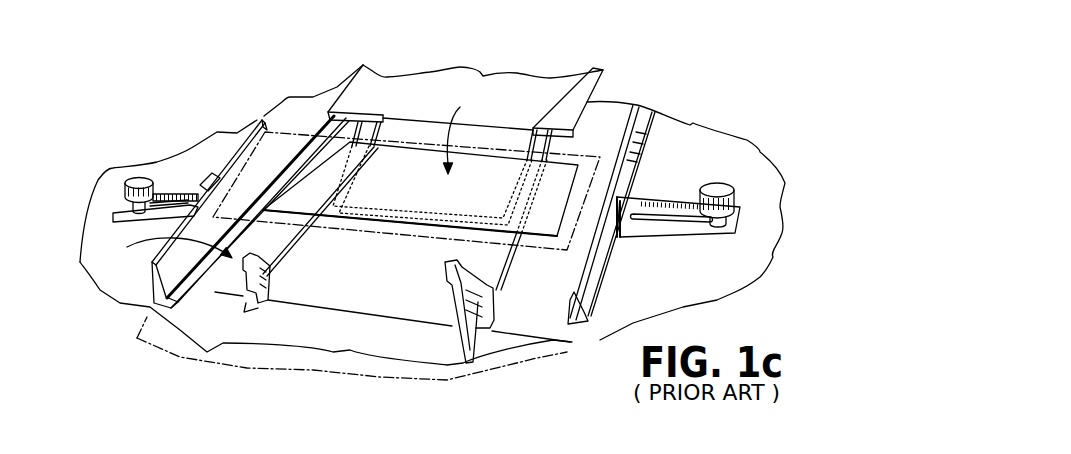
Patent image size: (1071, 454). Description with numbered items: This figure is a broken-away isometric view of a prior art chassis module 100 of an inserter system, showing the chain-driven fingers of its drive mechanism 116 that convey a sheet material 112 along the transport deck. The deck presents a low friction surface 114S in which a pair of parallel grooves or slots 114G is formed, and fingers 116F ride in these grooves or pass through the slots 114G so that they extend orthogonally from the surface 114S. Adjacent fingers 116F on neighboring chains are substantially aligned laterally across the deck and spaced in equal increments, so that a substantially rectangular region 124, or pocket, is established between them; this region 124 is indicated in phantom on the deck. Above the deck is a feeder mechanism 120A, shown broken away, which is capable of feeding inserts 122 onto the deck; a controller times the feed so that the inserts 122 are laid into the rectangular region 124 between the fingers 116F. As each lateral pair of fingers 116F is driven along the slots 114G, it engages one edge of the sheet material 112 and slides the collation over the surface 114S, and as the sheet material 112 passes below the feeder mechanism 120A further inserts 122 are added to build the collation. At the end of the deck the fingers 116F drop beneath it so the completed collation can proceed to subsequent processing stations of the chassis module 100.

The chassis module 100 is at (693, 107).
The sheet material 112 is at (523, 333).
The grooves or slots 114G is at (387, 130).
The low friction surface 114S is at (362, 283).
The drive mechanism 116 is at (516, 284).
The fingers 116F is at (274, 274).
The feeder mechanism 120A is at (484, 83).
The inserts 122 is at (304, 178).
The rectangular region 124 is at (580, 195).